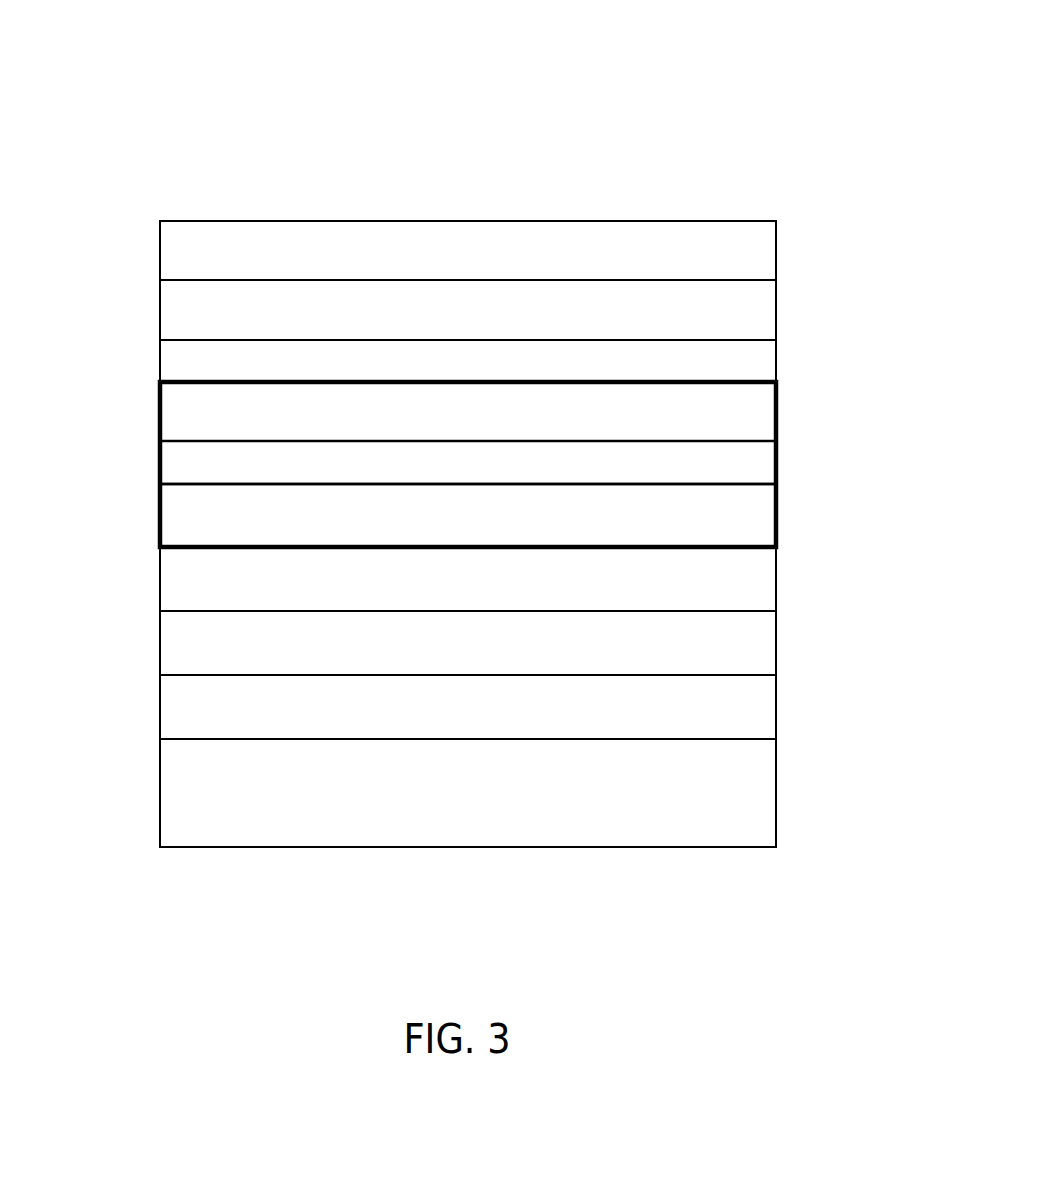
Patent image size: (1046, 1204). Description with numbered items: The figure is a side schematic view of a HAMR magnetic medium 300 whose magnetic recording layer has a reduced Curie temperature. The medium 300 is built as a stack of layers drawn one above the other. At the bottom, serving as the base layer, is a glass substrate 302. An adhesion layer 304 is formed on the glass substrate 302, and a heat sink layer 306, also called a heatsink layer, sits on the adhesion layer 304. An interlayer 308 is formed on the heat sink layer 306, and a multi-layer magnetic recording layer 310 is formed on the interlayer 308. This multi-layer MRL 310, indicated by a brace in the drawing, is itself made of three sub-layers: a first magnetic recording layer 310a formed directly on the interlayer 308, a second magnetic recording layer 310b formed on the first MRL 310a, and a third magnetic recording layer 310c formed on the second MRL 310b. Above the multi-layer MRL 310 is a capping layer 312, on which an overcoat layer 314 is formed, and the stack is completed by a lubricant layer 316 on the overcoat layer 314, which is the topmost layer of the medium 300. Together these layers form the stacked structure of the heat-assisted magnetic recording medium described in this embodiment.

The HAMR magnetic medium 300 is at (468, 431).
The glass substrate 302 is at (157, 791).
The adhesion layer 304 is at (157, 706).
The heat sink layer 306 is at (157, 641).
The interlayer 308 is at (157, 576).
The multi-layer magnetic recording layer 310 is at (789, 550).
The first magnetic recording layer 310a is at (177, 513).
The second magnetic recording layer 310b is at (177, 460).
The third magnetic recording layer 310c is at (175, 410).
The capping layer 312 is at (157, 358).
The overcoat layer 314 is at (157, 308).
The lubricant layer 316 is at (157, 250).